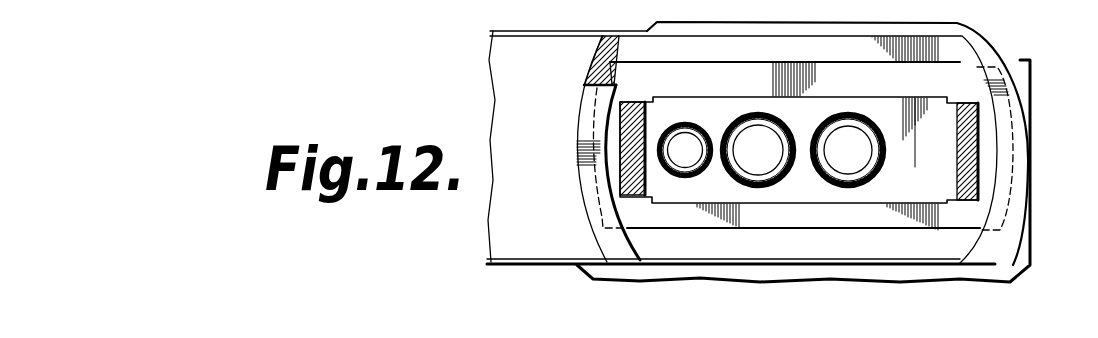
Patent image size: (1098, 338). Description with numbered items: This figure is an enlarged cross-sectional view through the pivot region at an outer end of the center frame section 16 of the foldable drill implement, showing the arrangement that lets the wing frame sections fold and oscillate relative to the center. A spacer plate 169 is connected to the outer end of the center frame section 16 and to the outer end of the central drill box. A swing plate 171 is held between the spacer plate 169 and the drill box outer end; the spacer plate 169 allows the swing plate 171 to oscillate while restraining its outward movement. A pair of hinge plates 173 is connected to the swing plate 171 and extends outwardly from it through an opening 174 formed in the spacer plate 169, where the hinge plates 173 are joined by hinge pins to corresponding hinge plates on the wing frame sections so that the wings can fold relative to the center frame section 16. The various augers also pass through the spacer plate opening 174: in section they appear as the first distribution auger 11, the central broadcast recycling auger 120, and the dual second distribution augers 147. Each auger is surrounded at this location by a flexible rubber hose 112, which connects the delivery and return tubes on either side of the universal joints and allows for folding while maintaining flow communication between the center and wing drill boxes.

The center frame section 16 is at (497, 75).
The spacer plate 169 is at (997, 50).
The opening 174 is at (748, 70).
The swing plate 171 is at (887, 227).
The hinge plates 173 is at (638, 105).
The flexible rubber hose 112 is at (784, 150).
The central broadcast recycling auger 120 is at (672, 143).
The first distribution auger 11 is at (776, 176).
The dual second distribution augers 147 is at (866, 170).